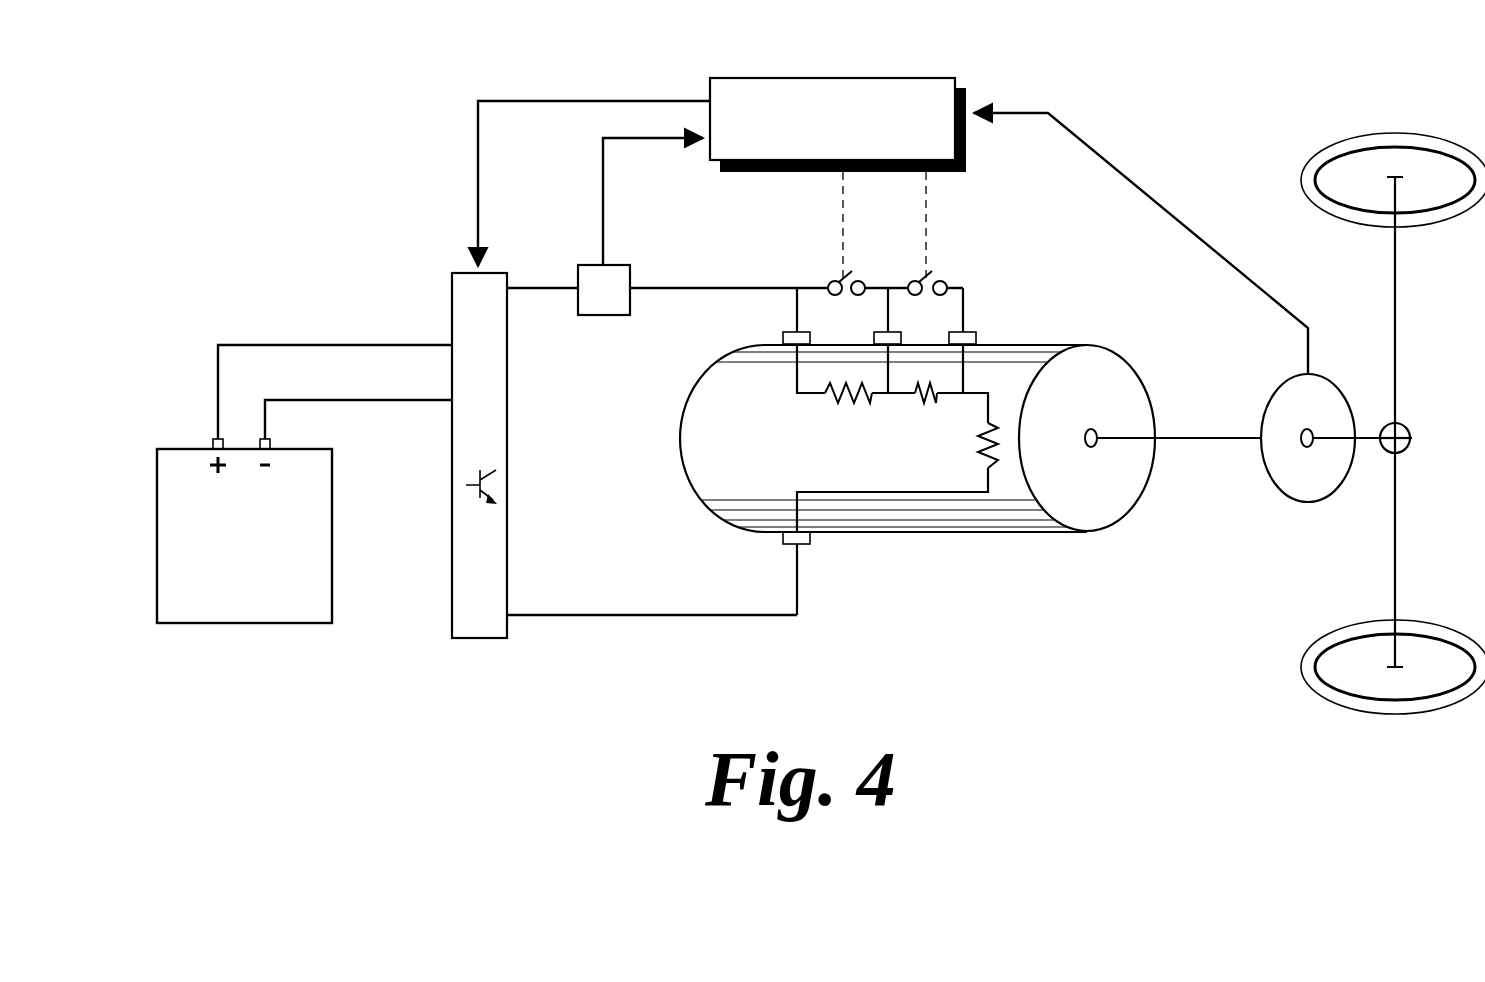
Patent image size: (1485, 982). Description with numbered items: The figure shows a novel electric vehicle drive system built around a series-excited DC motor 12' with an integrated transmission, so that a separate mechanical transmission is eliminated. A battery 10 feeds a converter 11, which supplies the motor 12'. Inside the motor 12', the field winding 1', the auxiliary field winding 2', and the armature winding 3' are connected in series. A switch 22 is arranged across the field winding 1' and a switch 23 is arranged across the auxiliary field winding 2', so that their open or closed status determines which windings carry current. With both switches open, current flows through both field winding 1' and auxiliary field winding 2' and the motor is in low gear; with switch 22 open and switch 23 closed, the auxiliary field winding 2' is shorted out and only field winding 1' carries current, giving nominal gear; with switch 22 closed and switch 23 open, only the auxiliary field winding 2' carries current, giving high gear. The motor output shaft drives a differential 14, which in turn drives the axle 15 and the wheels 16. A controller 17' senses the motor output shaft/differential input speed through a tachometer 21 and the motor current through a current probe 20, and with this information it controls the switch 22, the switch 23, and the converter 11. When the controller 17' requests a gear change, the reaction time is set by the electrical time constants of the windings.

The controller 17' is at (838, 150).
The current probe 20 is at (617, 282).
The switch 22 is at (842, 276).
The switch 23 is at (922, 276).
The motor 12' is at (970, 457).
The field winding 1' is at (838, 412).
The auxiliary field winding 2' is at (911, 415).
The armature winding 3' is at (961, 449).
The battery 10 is at (277, 612).
The converter 11 is at (498, 625).
The tachometer 21 is at (1328, 416).
The differential 14 is at (1393, 455).
The axle 15 is at (1397, 545).
The wheels 16 is at (1395, 131).